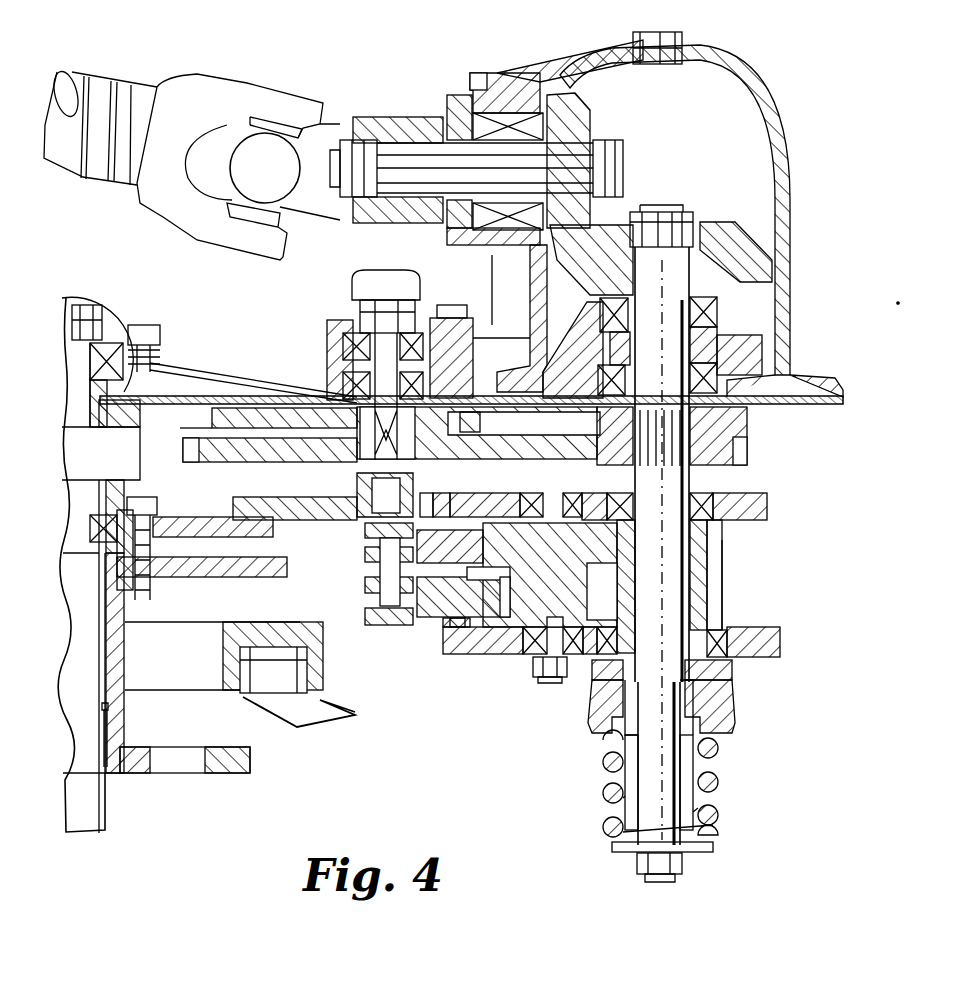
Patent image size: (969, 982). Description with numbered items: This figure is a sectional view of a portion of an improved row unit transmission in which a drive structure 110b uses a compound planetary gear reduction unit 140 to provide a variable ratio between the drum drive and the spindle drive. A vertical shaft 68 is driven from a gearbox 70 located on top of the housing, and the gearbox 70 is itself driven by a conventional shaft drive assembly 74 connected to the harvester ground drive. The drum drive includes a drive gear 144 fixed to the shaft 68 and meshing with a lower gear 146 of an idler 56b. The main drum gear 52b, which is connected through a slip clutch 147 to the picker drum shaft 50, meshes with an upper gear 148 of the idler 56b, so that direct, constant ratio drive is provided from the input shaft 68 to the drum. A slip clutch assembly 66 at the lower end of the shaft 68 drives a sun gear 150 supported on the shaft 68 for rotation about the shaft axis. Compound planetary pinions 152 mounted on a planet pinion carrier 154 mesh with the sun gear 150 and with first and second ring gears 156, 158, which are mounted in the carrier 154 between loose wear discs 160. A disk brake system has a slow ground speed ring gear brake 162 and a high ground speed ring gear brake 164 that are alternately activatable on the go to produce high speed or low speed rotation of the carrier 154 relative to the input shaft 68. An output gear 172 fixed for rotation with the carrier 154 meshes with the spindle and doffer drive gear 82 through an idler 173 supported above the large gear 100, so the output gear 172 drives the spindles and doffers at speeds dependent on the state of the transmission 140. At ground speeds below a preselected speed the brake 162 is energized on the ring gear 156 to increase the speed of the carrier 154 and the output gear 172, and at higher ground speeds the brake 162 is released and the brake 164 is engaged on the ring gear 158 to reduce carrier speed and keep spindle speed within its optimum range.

The shaft drive assembly 74 is at (287, 70).
The gearbox 70 is at (768, 60).
The idler 56b is at (305, 335).
The slip clutch 147 is at (130, 440).
The main drum gear 52b is at (248, 415).
The upper gear 148 is at (483, 418).
The drive gear 144 is at (753, 458).
The output gear 172 is at (745, 503).
The spindle and doffer drive gear 82 is at (195, 522).
The lower gear 146 is at (265, 460).
The first ring gear 156 is at (362, 500).
The loose wear discs 160 is at (456, 520).
The compound planetary pinions 152 is at (503, 535).
The idler 173 is at (386, 525).
The slow ground speed ring gear brake 162 is at (368, 552).
The high ground speed ring gear brake 164 is at (370, 600).
The large gear 100 is at (218, 578).
The sun gear 150 is at (715, 545).
The drive structure 110b is at (765, 578).
The vertical shaft 68 is at (672, 600).
The second ring gear 158 is at (393, 605).
The planet pinion carrier 154 is at (505, 647).
The compound planetary gear reduction unit 140 is at (552, 665).
The picker drum shaft 50 is at (84, 732).
The slip clutch assembly 66 is at (735, 796).